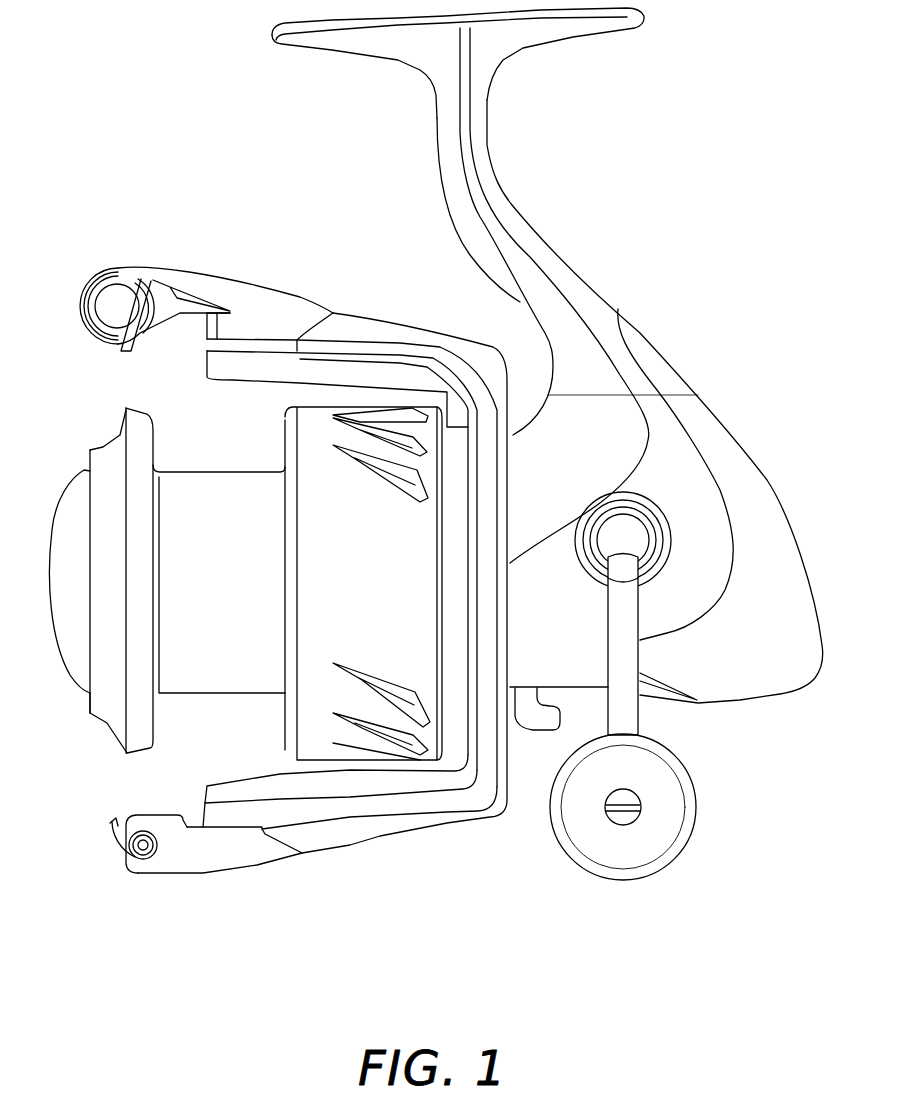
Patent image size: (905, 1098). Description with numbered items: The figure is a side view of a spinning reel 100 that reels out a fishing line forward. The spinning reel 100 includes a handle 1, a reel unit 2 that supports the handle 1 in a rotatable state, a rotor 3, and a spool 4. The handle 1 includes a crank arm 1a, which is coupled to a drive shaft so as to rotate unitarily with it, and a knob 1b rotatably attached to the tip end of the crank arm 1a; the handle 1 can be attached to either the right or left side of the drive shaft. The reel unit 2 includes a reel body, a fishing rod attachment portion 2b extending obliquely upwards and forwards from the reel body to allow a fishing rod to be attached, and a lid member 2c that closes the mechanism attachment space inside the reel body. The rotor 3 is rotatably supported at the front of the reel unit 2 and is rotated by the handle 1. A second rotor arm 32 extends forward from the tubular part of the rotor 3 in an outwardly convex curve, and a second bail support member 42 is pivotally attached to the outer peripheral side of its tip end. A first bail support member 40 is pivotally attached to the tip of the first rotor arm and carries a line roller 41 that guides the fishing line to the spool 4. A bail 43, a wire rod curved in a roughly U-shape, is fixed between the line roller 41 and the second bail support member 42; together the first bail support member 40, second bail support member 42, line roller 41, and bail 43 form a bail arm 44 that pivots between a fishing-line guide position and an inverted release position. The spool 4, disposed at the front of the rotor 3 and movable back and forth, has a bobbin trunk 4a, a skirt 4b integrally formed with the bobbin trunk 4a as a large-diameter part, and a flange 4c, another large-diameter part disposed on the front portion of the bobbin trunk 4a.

The spinning reel 100 is at (643, 120).
The handle 1 is at (642, 728).
The crank arm 1a is at (630, 708).
The knob 1b is at (610, 853).
The reel unit 2 is at (613, 282).
The fishing rod attachment portion 2b is at (537, 243).
The lid member 2c is at (610, 427).
The rotor 3 is at (362, 300).
The second rotor arm 32 is at (380, 832).
The spool 4 is at (210, 463).
The bobbin trunk 4a is at (213, 660).
The skirt 4b is at (313, 432).
The flange 4c is at (137, 432).
The first bail support member 40 is at (187, 274).
The line roller 41 is at (100, 263).
The second bail support member 42 is at (213, 865).
The bail 43 is at (110, 343).
The bail arm 44 is at (230, 267).